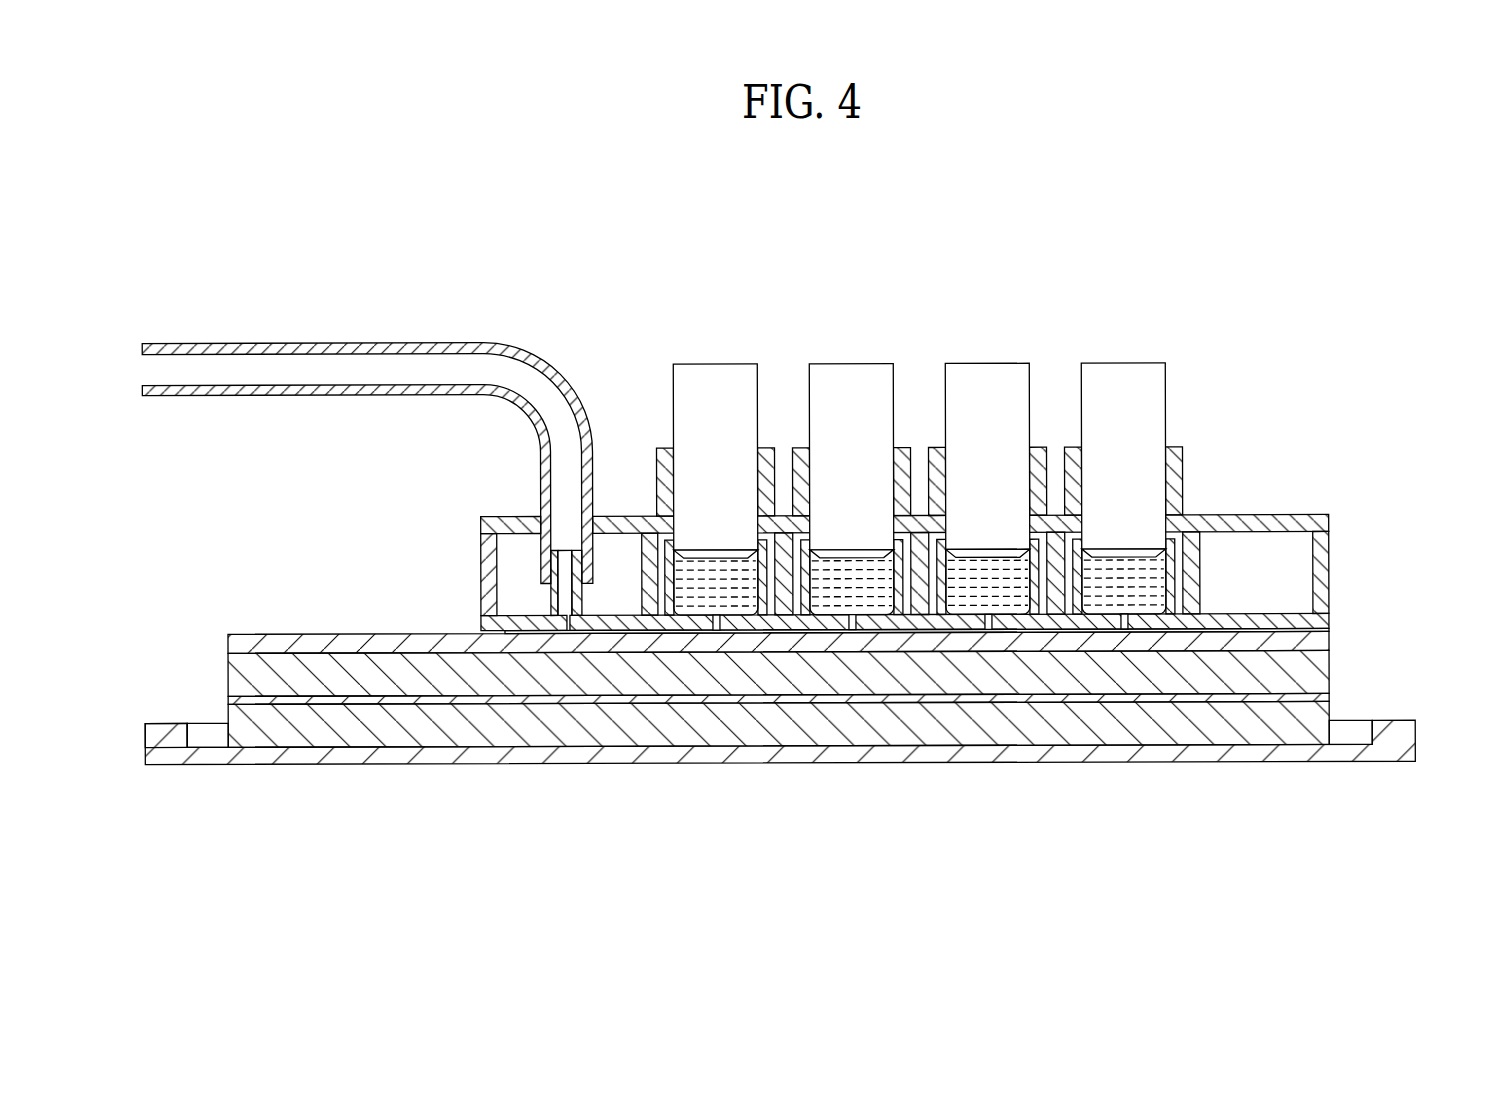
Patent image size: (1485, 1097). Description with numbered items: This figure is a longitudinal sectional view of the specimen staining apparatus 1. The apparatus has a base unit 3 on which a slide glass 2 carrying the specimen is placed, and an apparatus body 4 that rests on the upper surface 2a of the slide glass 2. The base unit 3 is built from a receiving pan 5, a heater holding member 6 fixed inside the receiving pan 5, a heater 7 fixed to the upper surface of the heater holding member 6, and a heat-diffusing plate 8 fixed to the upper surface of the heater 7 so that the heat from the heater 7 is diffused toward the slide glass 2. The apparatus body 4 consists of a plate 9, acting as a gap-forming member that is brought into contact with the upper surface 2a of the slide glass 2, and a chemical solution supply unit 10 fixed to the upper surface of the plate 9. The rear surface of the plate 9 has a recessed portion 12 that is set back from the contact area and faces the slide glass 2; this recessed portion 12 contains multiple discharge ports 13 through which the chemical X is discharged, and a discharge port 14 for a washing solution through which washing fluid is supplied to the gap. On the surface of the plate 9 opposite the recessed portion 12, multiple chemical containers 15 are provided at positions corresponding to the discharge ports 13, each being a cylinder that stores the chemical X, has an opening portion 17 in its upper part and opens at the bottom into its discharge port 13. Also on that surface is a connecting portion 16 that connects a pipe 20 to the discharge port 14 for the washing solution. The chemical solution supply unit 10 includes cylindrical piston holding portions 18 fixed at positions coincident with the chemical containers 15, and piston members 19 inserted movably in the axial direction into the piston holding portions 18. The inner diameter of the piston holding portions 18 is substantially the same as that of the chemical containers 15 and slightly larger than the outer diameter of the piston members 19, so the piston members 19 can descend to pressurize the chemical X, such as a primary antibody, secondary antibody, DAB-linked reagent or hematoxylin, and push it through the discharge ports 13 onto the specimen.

The specimen staining apparatus 1 is at (759, 487).
The slide glass 2 is at (782, 644).
The upper surface 2a is at (338, 633).
The base unit 3 is at (785, 702).
The apparatus body 4 is at (973, 580).
The receiving pan 5 is at (145, 731).
The heater holding member 6 is at (228, 712).
The heater 7 is at (228, 698).
The heat-diffusing plate 8 is at (1329, 668).
The plate 9 is at (1287, 615).
The chemical solution supply unit 10 is at (1288, 516).
The recessed portion 12 is at (1270, 633).
The discharge ports 13 is at (1124, 622).
The discharge port for a washing solution 14 is at (567, 617).
The chemical containers 15 is at (692, 637).
The connecting portion 16 is at (548, 594).
The opening portion 17 is at (678, 550).
The piston holding portions 18 is at (669, 448).
The piston members 19 is at (718, 364).
The pipe 20 is at (318, 342).
The chemical X is at (728, 572).